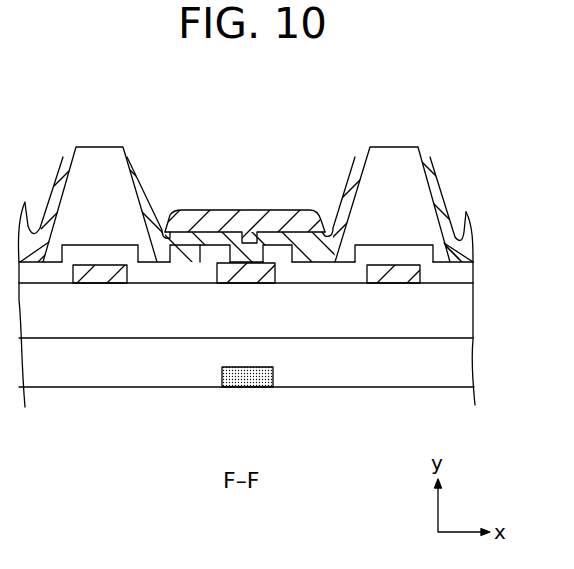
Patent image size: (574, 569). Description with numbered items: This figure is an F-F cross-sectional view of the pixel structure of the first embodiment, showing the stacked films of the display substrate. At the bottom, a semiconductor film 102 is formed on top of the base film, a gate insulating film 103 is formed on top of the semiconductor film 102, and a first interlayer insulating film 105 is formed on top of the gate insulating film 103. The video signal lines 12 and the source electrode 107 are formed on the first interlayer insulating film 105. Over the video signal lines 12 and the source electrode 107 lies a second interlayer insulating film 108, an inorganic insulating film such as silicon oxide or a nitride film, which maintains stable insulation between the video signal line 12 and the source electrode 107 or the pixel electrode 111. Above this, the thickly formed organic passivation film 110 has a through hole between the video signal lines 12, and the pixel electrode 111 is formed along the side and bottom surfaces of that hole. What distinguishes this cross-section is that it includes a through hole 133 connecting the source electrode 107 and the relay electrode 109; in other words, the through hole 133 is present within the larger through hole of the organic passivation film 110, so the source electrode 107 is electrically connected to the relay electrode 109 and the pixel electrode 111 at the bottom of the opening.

The video signal line 12 is at (97, 278).
The semiconductor film 102 is at (247, 383).
The gate insulating film 103 is at (460, 361).
The first interlayer insulating film 105 is at (457, 311).
The source electrode 107 is at (234, 282).
The second interlayer insulating film 108 is at (455, 273).
The relay electrode 109 is at (273, 210).
The organic passivation film 110 is at (99, 164).
The pixel electrode 111 is at (347, 190).
The through hole 133 is at (223, 255).